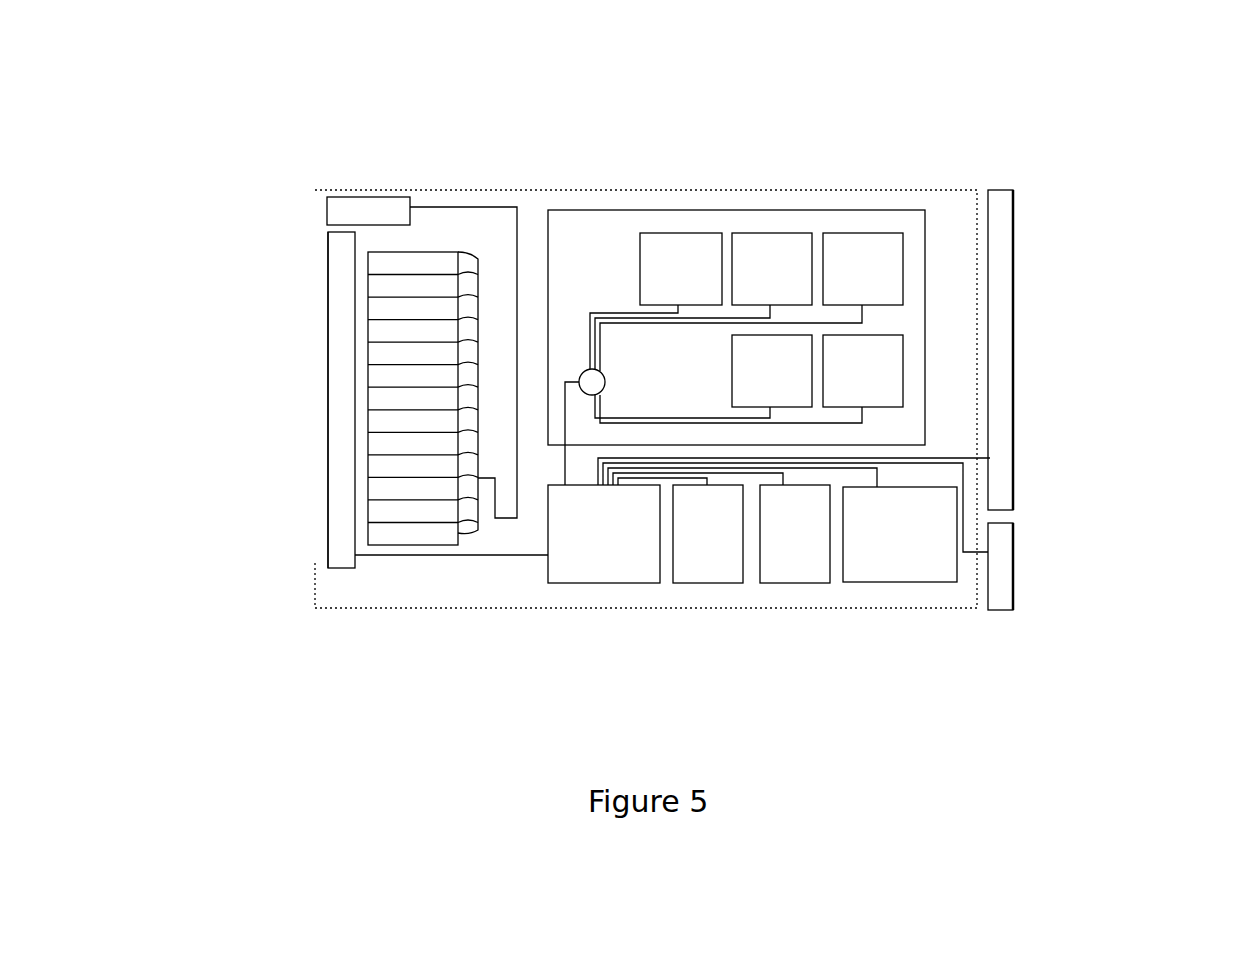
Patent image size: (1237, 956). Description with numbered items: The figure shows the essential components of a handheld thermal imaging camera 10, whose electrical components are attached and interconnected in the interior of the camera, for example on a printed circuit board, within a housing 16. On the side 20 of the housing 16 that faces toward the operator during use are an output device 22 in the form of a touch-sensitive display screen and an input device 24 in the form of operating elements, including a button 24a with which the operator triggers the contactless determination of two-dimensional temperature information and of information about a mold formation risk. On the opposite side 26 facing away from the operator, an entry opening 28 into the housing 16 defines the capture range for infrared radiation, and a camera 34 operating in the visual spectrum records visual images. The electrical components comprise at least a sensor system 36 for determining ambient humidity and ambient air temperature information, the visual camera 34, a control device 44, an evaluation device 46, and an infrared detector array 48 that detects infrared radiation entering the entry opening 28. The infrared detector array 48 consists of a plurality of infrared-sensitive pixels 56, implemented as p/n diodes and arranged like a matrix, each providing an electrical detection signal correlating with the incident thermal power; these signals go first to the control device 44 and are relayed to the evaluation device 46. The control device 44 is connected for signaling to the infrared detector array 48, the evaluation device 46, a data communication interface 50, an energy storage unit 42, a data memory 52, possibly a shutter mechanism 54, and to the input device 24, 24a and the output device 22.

The thermal imaging camera 10 is at (703, 376).
The housing 16 is at (957, 188).
The side facing toward an operator 20 is at (1098, 362).
The output device 22 is at (998, 402).
The input device 24 is at (1098, 566).
The button 24a is at (997, 560).
The side facing away from the operator 26 is at (376, 400).
The entry opening 28 is at (315, 425).
The camera 34 is at (366, 159).
The sensor system 36 is at (370, 213).
The energy storage unit 42 is at (883, 560).
The control device 44 is at (605, 560).
The evaluation device 46 is at (582, 232).
The infrared detector array 48 is at (463, 233).
The data communication interface 50 is at (720, 560).
The data memory 52 is at (792, 560).
The shutter mechanism 54 is at (335, 460).
The pixels 56 is at (425, 513).